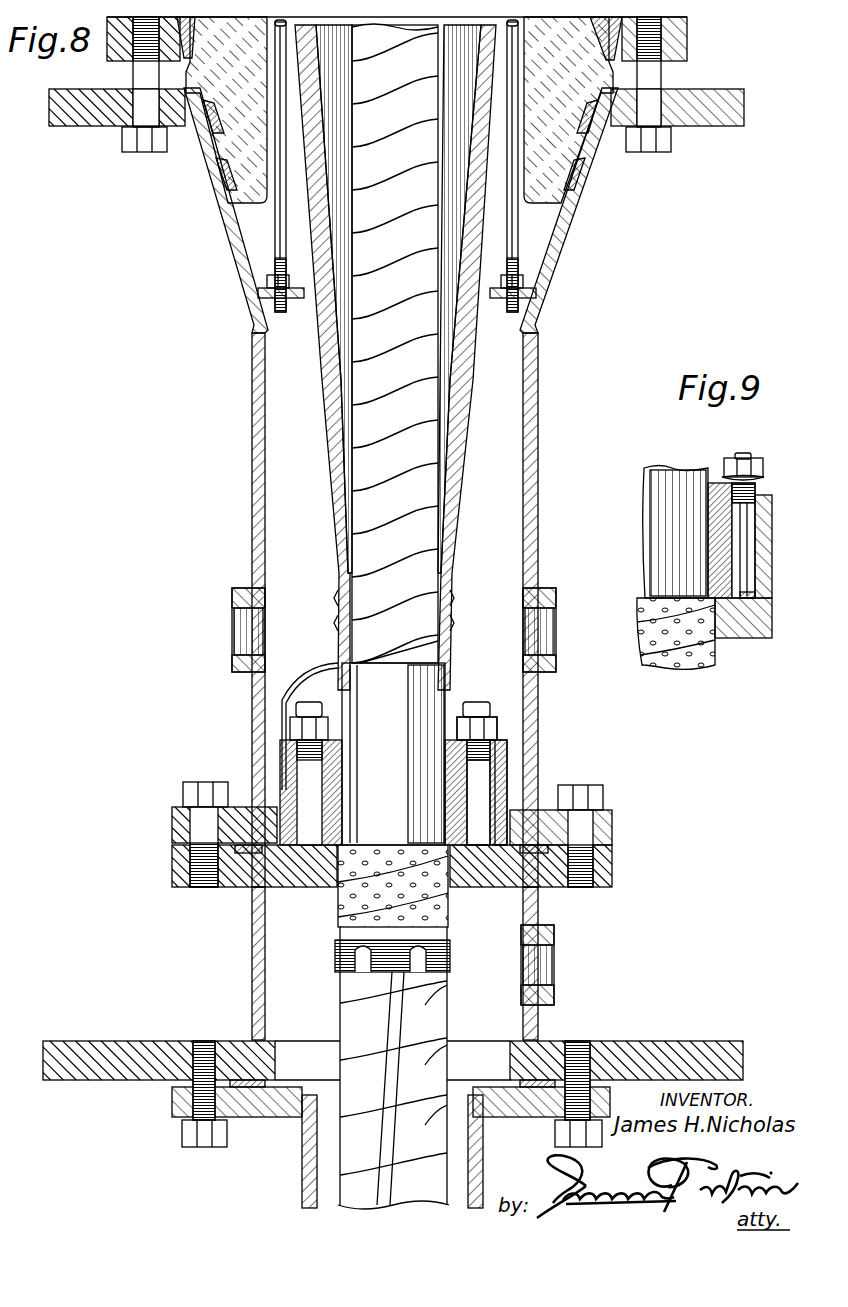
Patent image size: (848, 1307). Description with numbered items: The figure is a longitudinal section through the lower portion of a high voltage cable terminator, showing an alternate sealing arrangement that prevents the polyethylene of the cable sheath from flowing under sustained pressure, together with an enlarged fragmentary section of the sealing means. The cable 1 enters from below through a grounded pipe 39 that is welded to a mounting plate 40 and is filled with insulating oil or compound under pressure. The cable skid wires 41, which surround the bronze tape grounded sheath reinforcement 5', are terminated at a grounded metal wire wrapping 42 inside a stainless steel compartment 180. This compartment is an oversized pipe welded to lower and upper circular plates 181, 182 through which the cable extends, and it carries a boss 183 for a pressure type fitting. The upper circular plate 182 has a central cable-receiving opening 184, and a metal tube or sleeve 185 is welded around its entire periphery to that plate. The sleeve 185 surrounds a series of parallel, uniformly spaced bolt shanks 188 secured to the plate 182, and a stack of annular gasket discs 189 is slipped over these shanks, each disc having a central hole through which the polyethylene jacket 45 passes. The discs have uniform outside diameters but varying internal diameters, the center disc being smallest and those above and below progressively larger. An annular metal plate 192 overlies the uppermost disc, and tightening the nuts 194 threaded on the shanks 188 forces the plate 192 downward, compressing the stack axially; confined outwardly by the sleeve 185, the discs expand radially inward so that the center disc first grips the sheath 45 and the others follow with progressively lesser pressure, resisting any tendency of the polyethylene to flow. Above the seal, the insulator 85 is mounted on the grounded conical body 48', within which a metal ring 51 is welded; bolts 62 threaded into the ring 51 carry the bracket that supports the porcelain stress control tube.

In FIG. 8, the cable 1 is at (212, 491).
In FIG. 8, the bronze tape grounded sheath reinforcement 5' is at (424, 1162).
In FIG. 8, the grounded pipe 39 is at (305, 1172).
In FIG. 8, the mounting plate 40 is at (250, 1106).
In FIG. 8, the cable skid wires 41 is at (400, 1040).
In FIG. 8, the grounded metal wire wrapping 42 is at (448, 960).
In FIG. 8, the polyethylene jacket 45 is at (440, 712).
In FIG. 9, the polyethylene jacket 45 is at (680, 468).
In FIG. 8, the conical body 48' is at (422, 610).
In FIG. 8, the metal ring 51 is at (272, 300).
In FIG. 8, the bolts 62 is at (277, 241).
In FIG. 8, the insulator 85 is at (564, 142).
In FIG. 8, the stainless steel compartment 180 is at (500, 932).
In FIG. 8, the lower circular plate 181 is at (640, 1052).
In FIG. 8, the upper circular plate 182 is at (614, 876).
In FIG. 9, the upper circular plate 182 is at (755, 626).
In FIG. 8, the boss 183 is at (548, 977).
In FIG. 8, the cable-receiving opening 184 is at (447, 860).
In FIG. 9, the cable-receiving opening 184 is at (712, 640).
In FIG. 8, the metal tube or sleeve 185 is at (508, 772).
In FIG. 8, the bolt shanks 188 is at (478, 797).
In FIG. 9, the bolt shanks 188 is at (745, 560).
In FIG. 8, the annular gasket discs 189 is at (340, 790).
In FIG. 9, the annular gasket discs 189 is at (770, 585).
In FIG. 8, the annular metal plate 192 is at (332, 748).
In FIG. 9, the annular metal plate 192 is at (717, 480).
In FIG. 8, the nuts 194 is at (492, 728).
In FIG. 9, the nuts 194 is at (760, 463).